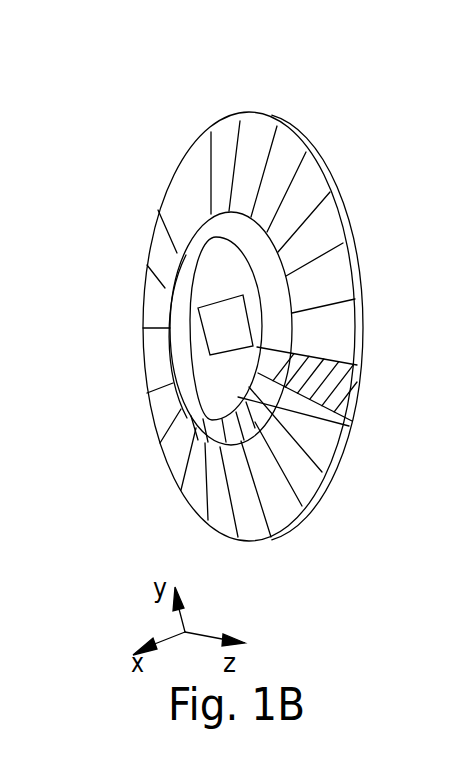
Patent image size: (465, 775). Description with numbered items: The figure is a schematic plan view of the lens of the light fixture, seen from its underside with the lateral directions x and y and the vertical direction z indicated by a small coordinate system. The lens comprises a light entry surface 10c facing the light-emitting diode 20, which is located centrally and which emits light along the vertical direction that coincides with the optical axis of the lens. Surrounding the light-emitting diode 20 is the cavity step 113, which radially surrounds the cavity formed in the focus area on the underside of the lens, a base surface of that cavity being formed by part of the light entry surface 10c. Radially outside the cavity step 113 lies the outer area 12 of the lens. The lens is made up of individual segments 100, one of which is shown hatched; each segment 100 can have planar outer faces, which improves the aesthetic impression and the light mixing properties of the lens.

The light entry surface 10c is at (222, 288).
The outer area 12 is at (197, 203).
The cavity step 113 is at (182, 301).
The light-emitting diode 20 is at (203, 340).
The segment 100 is at (328, 381).